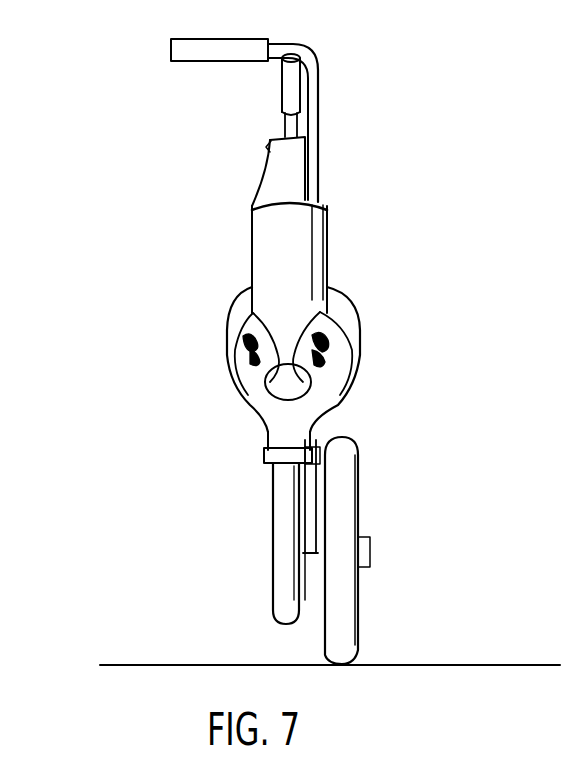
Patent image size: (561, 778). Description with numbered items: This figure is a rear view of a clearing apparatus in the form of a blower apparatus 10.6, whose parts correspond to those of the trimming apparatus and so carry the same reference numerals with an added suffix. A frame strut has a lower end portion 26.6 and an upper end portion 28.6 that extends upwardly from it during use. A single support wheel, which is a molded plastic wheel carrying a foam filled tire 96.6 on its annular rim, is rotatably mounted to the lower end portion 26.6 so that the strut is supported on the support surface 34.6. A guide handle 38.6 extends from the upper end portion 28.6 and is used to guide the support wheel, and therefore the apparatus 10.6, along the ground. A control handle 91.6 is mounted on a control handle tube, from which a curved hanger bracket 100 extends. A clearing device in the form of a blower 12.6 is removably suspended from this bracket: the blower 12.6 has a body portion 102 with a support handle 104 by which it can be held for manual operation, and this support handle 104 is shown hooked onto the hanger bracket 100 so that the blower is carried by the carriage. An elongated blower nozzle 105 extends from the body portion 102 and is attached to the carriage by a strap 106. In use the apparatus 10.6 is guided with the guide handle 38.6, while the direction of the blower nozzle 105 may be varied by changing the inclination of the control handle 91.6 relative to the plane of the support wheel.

The blower apparatus 10.6 is at (116, 201).
The blower 12.6 is at (176, 307).
The lower end portion 26.6 is at (310, 490).
The upper end portion 28.6 is at (310, 80).
The support surface 34.6 is at (408, 665).
The guide handle 38.6 is at (232, 52).
The control handle 91.6 is at (290, 100).
The foam filled tire 96.6 is at (340, 520).
The hanger bracket 100 is at (306, 130).
The body portion 102 is at (345, 318).
The support handle 104 is at (290, 148).
The blower nozzle 105 is at (285, 490).
The strap 106 is at (266, 458).